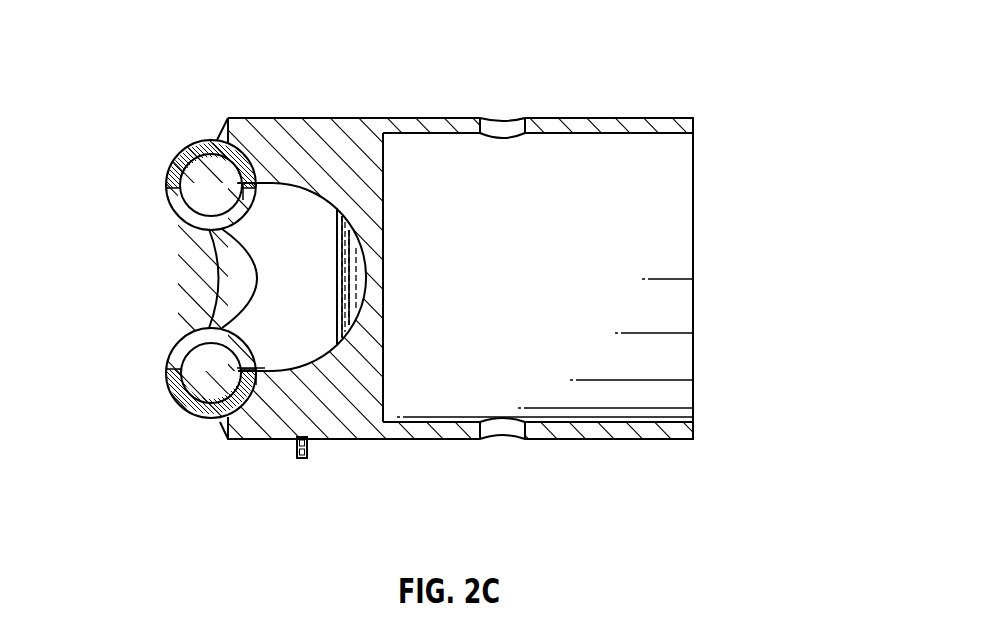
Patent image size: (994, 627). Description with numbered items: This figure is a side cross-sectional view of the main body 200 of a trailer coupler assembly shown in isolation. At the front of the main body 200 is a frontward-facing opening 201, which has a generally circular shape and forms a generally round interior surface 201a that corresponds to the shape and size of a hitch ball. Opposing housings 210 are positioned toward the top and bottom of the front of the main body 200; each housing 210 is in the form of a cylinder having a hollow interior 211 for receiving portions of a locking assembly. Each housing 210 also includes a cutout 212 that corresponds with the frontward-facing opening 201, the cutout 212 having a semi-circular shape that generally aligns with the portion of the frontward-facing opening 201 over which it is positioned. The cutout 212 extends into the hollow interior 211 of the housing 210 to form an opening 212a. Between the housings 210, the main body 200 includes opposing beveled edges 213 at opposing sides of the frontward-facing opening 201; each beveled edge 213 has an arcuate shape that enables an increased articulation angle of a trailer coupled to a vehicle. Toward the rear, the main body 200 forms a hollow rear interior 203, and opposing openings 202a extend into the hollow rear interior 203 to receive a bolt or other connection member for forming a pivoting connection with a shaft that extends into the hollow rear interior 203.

The main body 200 is at (722, 48).
The frontward-facing opening 201 is at (306, 457).
The interior surface 201a is at (327, 193).
The openings 202a is at (509, 118).
The hollow rear interior 203 is at (668, 240).
The housings 210 is at (155, 180).
The hollow interior 211 is at (206, 382).
The cutout 212 is at (253, 188).
The opening 212a is at (203, 207).
The beveled edges 213 is at (228, 257).